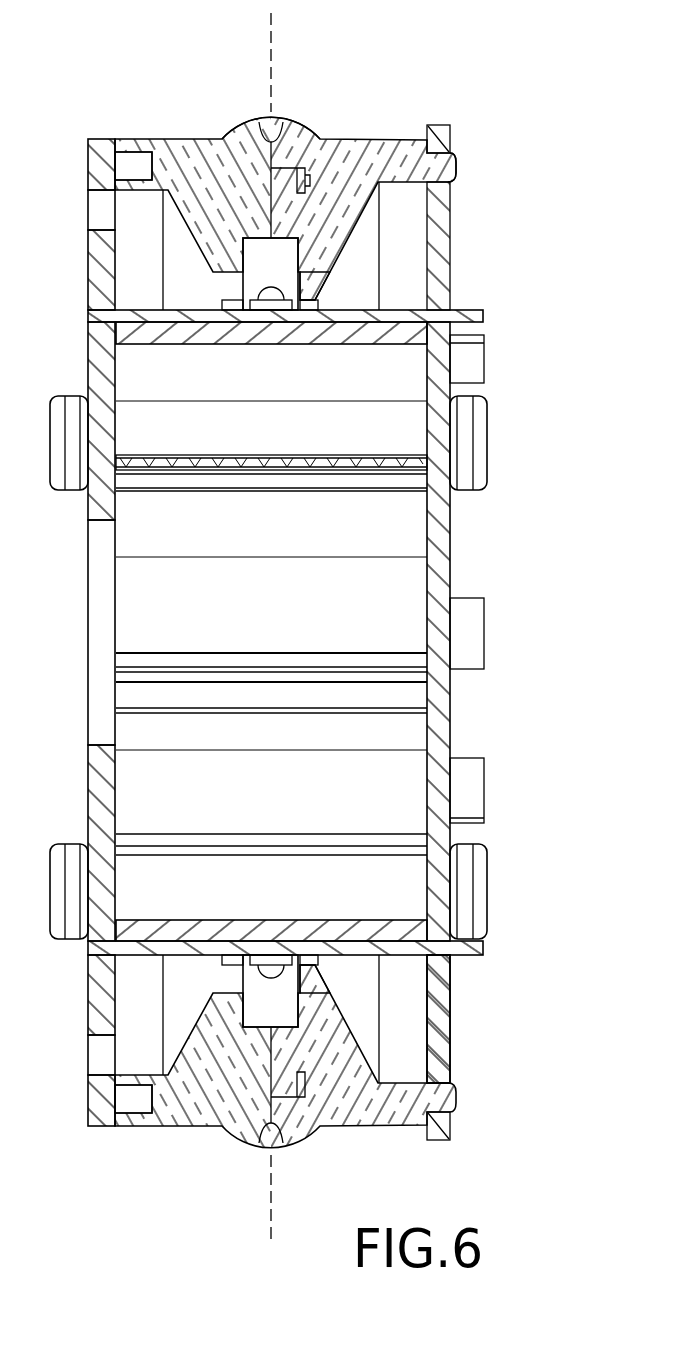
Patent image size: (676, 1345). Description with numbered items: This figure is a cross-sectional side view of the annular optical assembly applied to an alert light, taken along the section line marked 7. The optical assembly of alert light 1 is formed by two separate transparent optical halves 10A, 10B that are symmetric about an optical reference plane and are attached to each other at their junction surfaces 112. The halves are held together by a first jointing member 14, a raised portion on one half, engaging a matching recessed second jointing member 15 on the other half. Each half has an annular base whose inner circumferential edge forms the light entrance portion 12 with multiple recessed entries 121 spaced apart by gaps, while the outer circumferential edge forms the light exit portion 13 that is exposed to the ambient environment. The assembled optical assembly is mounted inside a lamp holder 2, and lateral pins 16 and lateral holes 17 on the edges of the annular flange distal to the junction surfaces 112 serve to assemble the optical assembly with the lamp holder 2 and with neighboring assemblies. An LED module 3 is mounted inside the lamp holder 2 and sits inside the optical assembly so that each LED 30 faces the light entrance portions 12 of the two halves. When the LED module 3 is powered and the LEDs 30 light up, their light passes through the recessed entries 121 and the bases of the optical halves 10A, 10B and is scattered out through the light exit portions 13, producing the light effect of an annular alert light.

The optical assembly of alert light 1 is at (291, 622).
The lamp holder 2 is at (460, 129).
The LED module 3 is at (163, 253).
The section line 7- 7 is at (268, 25).
The optical half 10A is at (394, 127).
The optical half 10B is at (284, 173).
The light entrance portion 12 is at (313, 302).
The light exit portion 13 is at (222, 138).
The first jointing member 14 is at (296, 193).
The second jointing member 15 is at (297, 200).
The lateral pin 16 is at (442, 165).
The lateral hole 17 is at (128, 163).
The LED 30 is at (262, 295).
The junction surface 112 is at (262, 128).
The recessed entry 121 is at (313, 283).